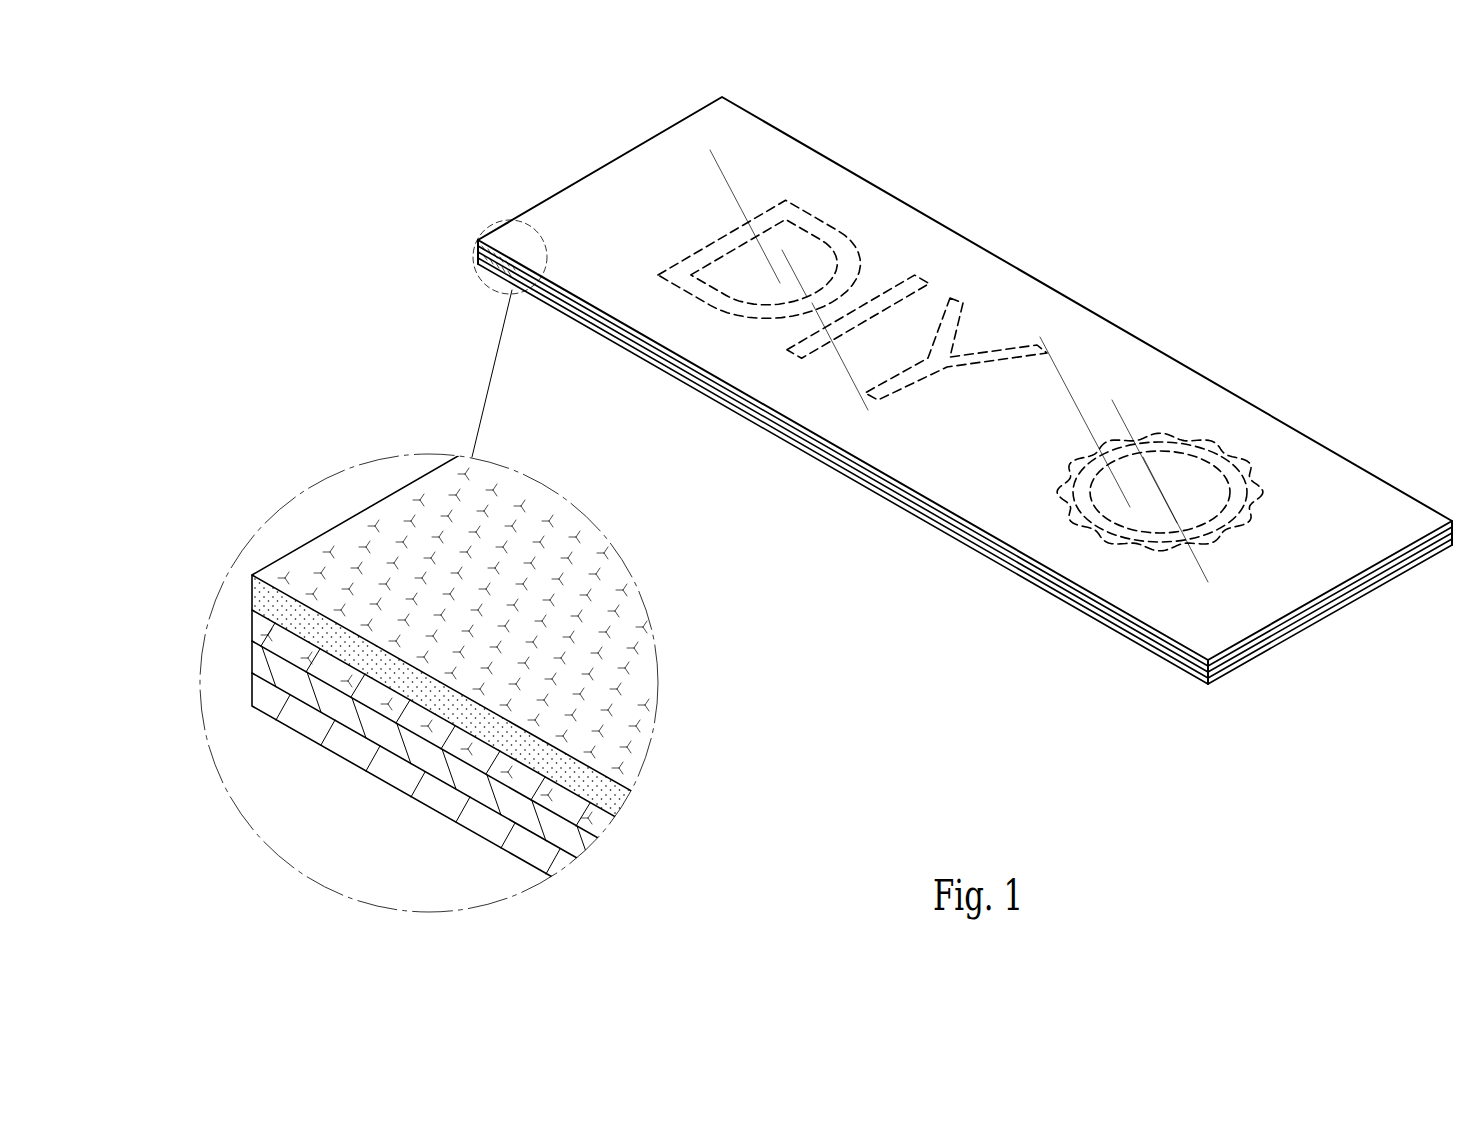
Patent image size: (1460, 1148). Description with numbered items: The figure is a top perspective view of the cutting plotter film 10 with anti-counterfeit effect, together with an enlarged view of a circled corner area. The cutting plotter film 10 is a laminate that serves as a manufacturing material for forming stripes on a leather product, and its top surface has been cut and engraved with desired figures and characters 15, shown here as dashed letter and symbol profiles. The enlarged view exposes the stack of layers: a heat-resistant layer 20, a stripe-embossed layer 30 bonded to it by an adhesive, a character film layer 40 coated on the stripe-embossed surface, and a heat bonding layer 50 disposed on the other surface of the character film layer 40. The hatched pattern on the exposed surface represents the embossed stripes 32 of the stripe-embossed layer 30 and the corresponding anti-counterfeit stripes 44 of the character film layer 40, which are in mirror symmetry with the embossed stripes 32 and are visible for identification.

The cutting plotter film 10 is at (1094, 230).
The figures and characters 15 is at (813, 216).
The heat-resistant layer 20 is at (252, 585).
The stripe-embossed layer 30 is at (252, 624).
The embossed stripes 32 is at (410, 572).
The character film layer 40 is at (252, 657).
The anti-counterfeit stripes 44 is at (410, 572).
The heat bonding layer 50 is at (342, 742).